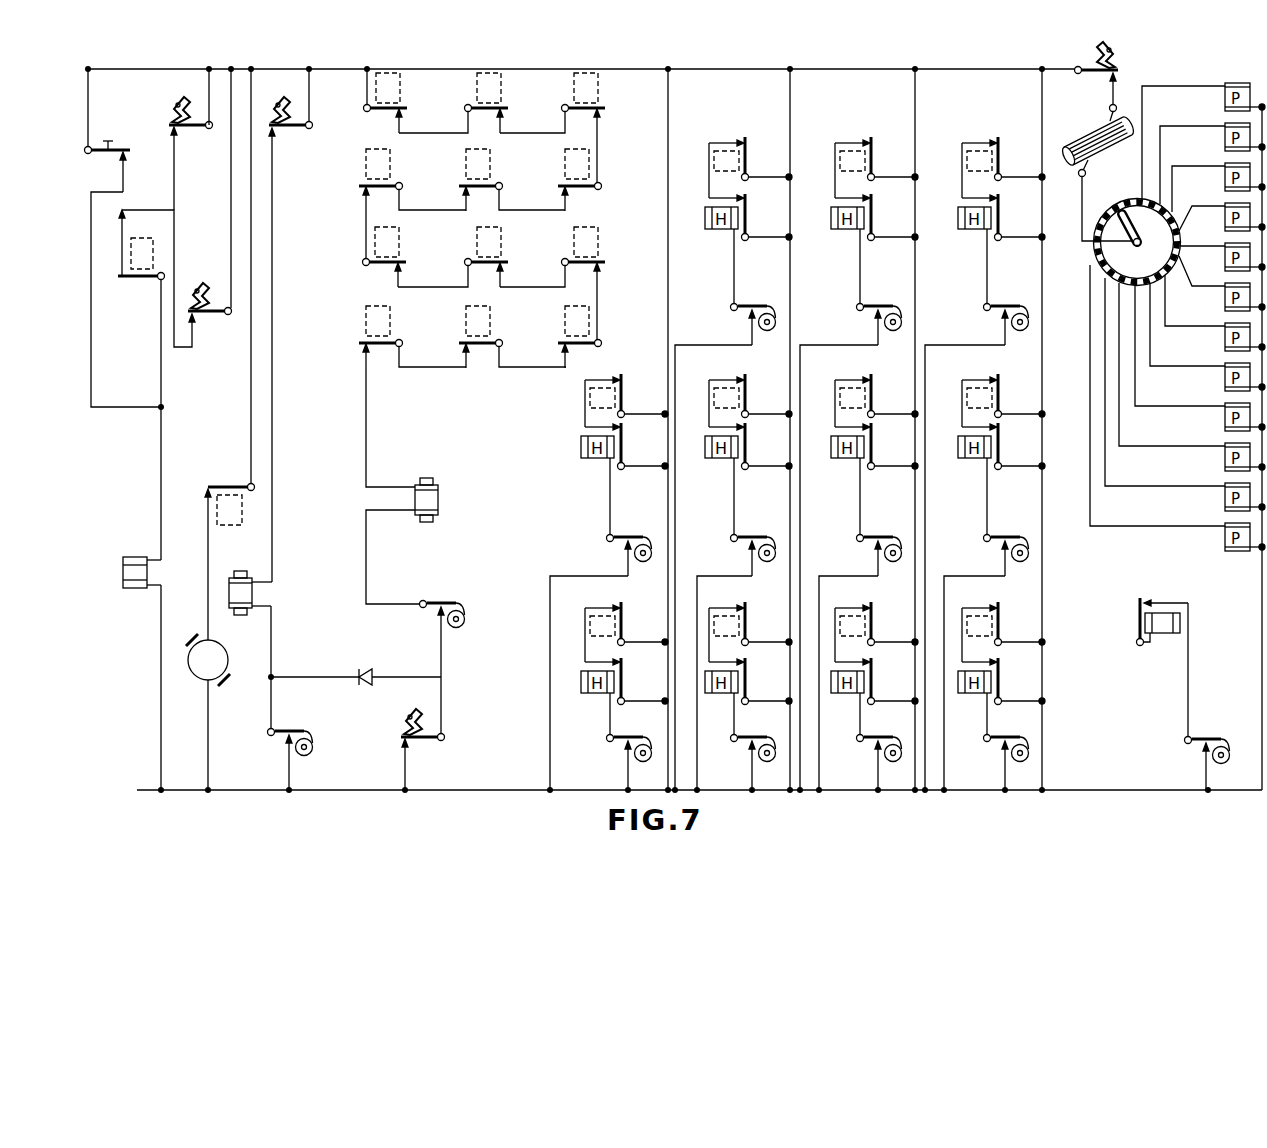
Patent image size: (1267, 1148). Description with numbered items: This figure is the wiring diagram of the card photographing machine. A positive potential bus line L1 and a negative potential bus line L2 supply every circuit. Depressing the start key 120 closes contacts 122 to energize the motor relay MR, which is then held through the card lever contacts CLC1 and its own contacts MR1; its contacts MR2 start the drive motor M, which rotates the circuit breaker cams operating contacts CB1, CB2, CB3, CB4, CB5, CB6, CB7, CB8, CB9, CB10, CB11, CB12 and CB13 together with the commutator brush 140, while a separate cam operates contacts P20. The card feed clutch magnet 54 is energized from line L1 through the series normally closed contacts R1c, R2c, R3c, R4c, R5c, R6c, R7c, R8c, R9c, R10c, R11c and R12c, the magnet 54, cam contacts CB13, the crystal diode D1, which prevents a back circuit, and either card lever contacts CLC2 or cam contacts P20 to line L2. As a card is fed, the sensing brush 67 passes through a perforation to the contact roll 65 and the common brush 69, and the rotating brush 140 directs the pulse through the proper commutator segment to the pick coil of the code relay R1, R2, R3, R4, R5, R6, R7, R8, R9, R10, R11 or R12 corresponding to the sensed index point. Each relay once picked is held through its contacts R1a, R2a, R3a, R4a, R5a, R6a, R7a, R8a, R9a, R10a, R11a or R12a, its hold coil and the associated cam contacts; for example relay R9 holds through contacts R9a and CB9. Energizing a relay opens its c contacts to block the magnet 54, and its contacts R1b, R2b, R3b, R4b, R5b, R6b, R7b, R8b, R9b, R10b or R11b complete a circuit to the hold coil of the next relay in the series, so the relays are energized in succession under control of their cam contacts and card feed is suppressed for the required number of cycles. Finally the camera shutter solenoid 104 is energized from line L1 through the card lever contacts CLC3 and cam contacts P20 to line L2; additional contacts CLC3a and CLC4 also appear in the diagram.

The positive potential bus line L1 is at (146, 72).
The negative potential bus line L2 is at (186, 790).
The start key 120 is at (110, 148).
The start key contacts 122 is at (130, 166).
The motor relay MR is at (145, 242).
The motor relay hold contacts MR1 is at (118, 278).
The motor relay contacts MR2 is at (205, 489).
The card lever contacts CLC1 is at (191, 316).
The card lever contacts CLC2 is at (407, 742).
The card lever contacts CLC3 is at (278, 129).
The cam limit contact 3a CLC3a is at (172, 127).
The cam limit contact 4 CLC4 is at (1120, 74).
The drive motor M is at (208, 663).
The solenoid 104 is at (250, 596).
The card feed clutch magnet 54 is at (436, 502).
The crystal diode D1 is at (362, 688).
The cam contacts P20 is at (285, 740).
The circuit breaker cam contacts CB1 is at (736, 545).
The circuit breaker cam contacts CB2 is at (741, 745).
The circuit breaker cam contacts CB3 is at (864, 314).
The circuit breaker cam contacts CB4 is at (861, 545).
The circuit breaker cam contacts CB5 is at (867, 745).
The circuit breaker cam contacts CB6 is at (991, 314).
The circuit breaker cam contacts CB7 is at (988, 545).
The circuit breaker cam contacts CB8 is at (994, 745).
The circuit breaker cam contacts CB9 is at (1196, 746).
The circuit breaker cam contacts CB10 is at (740, 314).
The circuit breaker cam contacts CB11 is at (614, 745).
The circuit breaker cam contacts CB12 is at (612, 545).
The circuit breaker cam contacts CB13 is at (432, 610).
The code relay R1 is at (714, 164).
The code relay R2 is at (714, 401).
The code relay R3 is at (739, 630).
The code relay R4 is at (840, 164).
The code relay R5 is at (840, 401).
The code relay R6 is at (865, 630).
The code relay R7 is at (967, 164).
The code relay R8 is at (967, 401).
The code relay R9 is at (992, 630).
The code relay R10 is at (590, 630).
The code relay R11 is at (590, 401).
The code relay R12 is at (598, 458).
The relay hold contacts R1a is at (744, 430).
The relay hold contacts R2a is at (744, 664).
The relay hold contacts R3a is at (868, 195).
The relay hold contacts R4a is at (870, 430).
The relay hold contacts R5a is at (870, 664).
The relay hold contacts R6a is at (995, 195).
The relay hold contacts R7a is at (997, 430).
The relay hold contacts R8a is at (997, 664).
The relay hold contacts R9a is at (1146, 598).
The relay hold contacts R10a is at (742, 195).
The relay hold contacts R11a is at (618, 664).
The relay hold contacts R12a is at (618, 430).
The relay transfer contacts R1b is at (744, 139).
The relay transfer contacts R2b is at (743, 376).
The relay transfer contacts R3b is at (743, 604).
The relay transfer contacts R4b is at (869, 139).
The relay transfer contacts R5b is at (869, 376).
The relay transfer contacts R6b is at (869, 604).
The relay transfer contacts R7b is at (996, 139).
The relay transfer contacts R8b is at (996, 376).
The relay transfer contacts R9b is at (996, 604).
The relay transfer contacts R10b is at (619, 604).
The relay transfer contacts R11b is at (619, 376).
The normally closed relay contacts R1c is at (605, 264).
The normally closed relay contacts R2c is at (505, 264).
The normally closed relay contacts R3c is at (405, 264).
The normally closed relay contacts R4c is at (358, 186).
The normally closed relay contacts R5c is at (459, 186).
The normally closed relay contacts R6c is at (558, 186).
The normally closed relay contacts R7c is at (605, 110).
The normally closed relay contacts R8c is at (507, 110).
The normally closed relay contacts R9c is at (407, 110).
The normally closed relay contacts R10c is at (560, 343).
The normally closed relay contacts R11c is at (460, 343).
The normally closed relay contacts R12c is at (360, 343).
The contact roll 65 is at (1108, 146).
The sensing brush 67 is at (1106, 120).
The common brush 69 is at (1085, 173).
The commutator brush 140 is at (1120, 205).